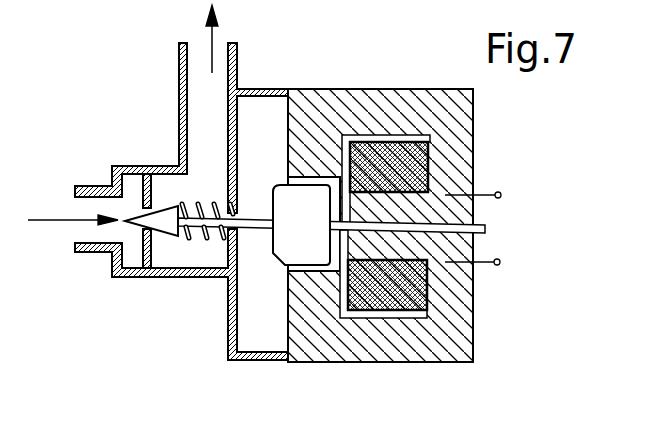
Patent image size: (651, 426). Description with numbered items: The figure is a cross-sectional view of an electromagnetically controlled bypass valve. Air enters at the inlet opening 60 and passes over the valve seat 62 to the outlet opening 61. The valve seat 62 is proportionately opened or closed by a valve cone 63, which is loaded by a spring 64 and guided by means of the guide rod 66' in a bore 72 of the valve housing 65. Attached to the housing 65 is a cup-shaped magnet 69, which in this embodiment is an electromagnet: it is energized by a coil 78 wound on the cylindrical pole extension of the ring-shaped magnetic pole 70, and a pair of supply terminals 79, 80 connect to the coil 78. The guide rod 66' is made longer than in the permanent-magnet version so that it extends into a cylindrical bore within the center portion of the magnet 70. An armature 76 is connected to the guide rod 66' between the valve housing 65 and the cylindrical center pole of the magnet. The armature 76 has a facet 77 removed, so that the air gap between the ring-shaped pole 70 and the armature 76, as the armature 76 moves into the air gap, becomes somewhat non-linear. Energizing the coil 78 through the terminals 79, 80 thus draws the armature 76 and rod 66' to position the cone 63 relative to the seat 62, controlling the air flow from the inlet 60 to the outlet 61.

The inlet opening 60 is at (81, 235).
The outlet opening 61 is at (197, 48).
The valve seat 62 is at (152, 250).
The valve cone 63 is at (170, 226).
The spring 64 is at (200, 204).
The valve housing 65 is at (240, 71).
The guide rod 66' is at (360, 228).
The cup-shaped magnet 69 is at (458, 150).
The ring-shaped magnetic pole 70 is at (348, 100).
The bore 72 is at (275, 204).
The armature 76 is at (281, 184).
The facet 77 is at (279, 264).
The coil 78 is at (427, 297).
The supply terminal 79 is at (501, 262).
The supply terminal 80 is at (500, 192).